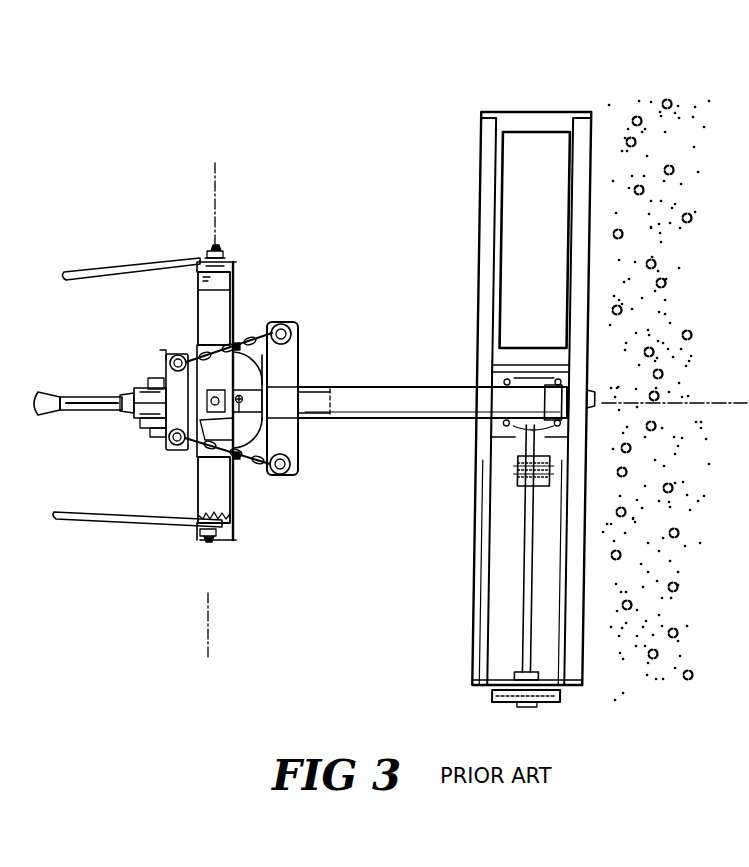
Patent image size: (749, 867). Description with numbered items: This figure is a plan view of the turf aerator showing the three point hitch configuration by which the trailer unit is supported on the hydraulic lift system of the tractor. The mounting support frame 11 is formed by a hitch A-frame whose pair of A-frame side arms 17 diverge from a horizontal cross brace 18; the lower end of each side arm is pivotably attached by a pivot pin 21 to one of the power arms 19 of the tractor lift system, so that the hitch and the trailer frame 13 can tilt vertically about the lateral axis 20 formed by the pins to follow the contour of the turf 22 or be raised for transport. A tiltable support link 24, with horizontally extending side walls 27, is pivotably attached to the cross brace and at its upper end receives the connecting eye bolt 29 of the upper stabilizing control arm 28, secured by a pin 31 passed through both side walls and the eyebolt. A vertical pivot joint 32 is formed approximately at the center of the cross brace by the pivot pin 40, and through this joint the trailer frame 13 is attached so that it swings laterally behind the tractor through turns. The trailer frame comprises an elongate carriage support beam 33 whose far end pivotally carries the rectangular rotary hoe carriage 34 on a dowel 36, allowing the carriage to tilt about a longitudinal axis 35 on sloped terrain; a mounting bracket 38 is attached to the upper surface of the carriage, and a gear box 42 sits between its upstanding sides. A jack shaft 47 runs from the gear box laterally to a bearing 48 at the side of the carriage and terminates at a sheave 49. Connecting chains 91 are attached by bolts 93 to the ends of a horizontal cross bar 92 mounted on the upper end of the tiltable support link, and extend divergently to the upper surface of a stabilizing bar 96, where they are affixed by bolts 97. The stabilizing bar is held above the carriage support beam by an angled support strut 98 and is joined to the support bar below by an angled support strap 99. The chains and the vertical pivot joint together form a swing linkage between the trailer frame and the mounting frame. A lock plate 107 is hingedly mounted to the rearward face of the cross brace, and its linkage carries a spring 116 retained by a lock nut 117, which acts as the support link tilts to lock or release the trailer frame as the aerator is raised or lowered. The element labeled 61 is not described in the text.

The mounting support frame 11 is at (284, 250).
The trailer frame 13 is at (422, 340).
The A-frame side arms 17 is at (236, 270).
The cross brace 18 is at (226, 292).
The power arms 19 is at (128, 262).
The lateral axis 20 is at (221, 176).
The pivot pin 21 is at (208, 250).
The turf 22 is at (742, 259).
The tiltable support link 24 is at (110, 447).
The side wall 27 is at (145, 388).
The upper stabilizing control arm 28 is at (82, 392).
The connecting eye bolt 29 is at (120, 396).
The pin 31 is at (152, 378).
The vertical pivot joint 32 is at (214, 490).
The carriage support beam 33 is at (408, 378).
The rotary hoe carriage 34 is at (483, 258).
The longitudinal axis 35 is at (742, 410).
The dowel 36 is at (600, 408).
The mounting bracket 38 is at (535, 362).
The pivot pin 40 is at (226, 390).
The gear box 42 is at (532, 420).
The jack shaft 47 is at (538, 508).
The bearing 48 is at (525, 676).
The sheave 49 is at (512, 706).
The catch 61 is at (228, 348).
The connecting chains 91 is at (252, 470).
The horizontal cross bar 92 is at (162, 350).
The bolt 93 is at (186, 354).
The stabilizing bar 96 is at (296, 441).
The bolts 97 is at (290, 326).
The angled support strut 98 is at (314, 390).
The angled support strap 99 is at (262, 416).
The lock plate 107 is at (246, 342).
The spring 116 is at (160, 440).
The lock nut 117 is at (150, 428).